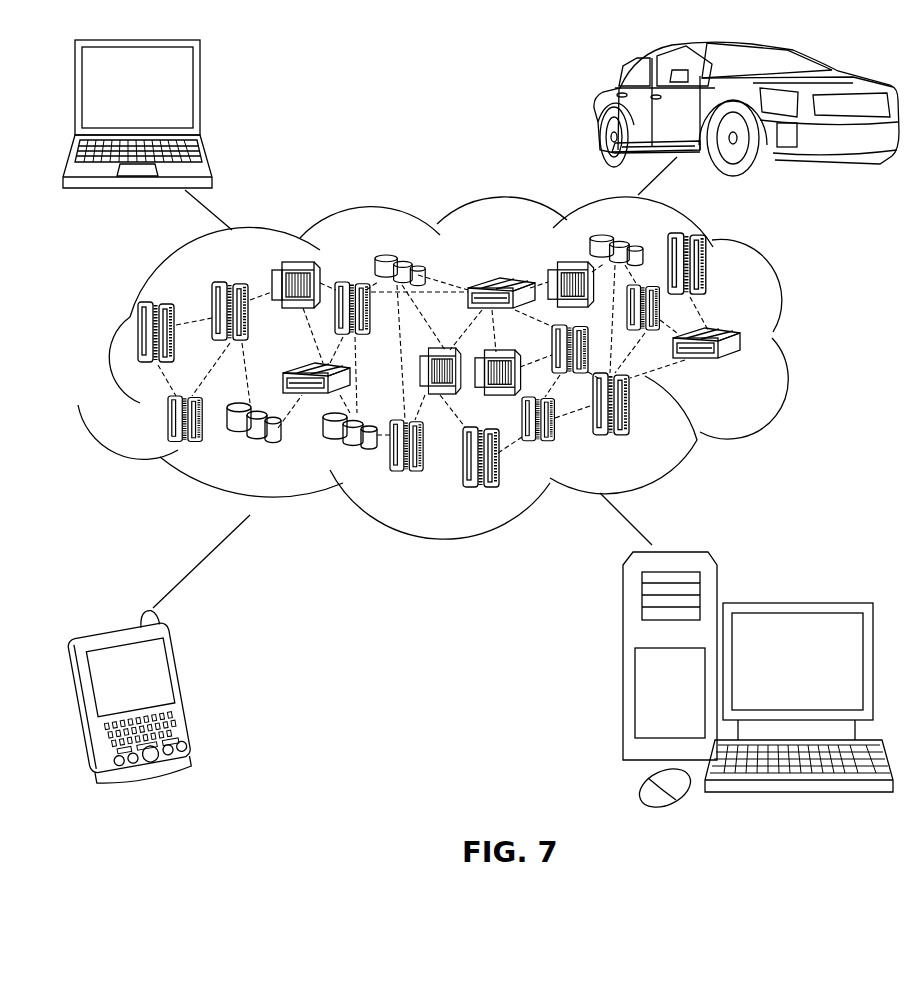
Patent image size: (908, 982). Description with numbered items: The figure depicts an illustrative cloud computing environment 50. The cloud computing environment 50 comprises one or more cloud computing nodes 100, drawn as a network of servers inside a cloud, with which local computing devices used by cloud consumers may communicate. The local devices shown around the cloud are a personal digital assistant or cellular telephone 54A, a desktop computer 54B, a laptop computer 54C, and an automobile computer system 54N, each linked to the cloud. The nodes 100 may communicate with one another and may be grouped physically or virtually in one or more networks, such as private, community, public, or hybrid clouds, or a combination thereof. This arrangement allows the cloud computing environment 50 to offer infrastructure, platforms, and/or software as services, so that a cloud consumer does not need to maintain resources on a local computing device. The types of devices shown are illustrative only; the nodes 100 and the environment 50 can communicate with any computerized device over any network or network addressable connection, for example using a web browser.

The cloud computing environment 50 is at (797, 340).
The cloud computing nodes 100 is at (750, 372).
The personal digital assistant or cellular telephone 54A is at (196, 690).
The desktop computer 54B is at (795, 603).
The laptop computer 54C is at (201, 93).
The automobile computer system 54N is at (596, 110).